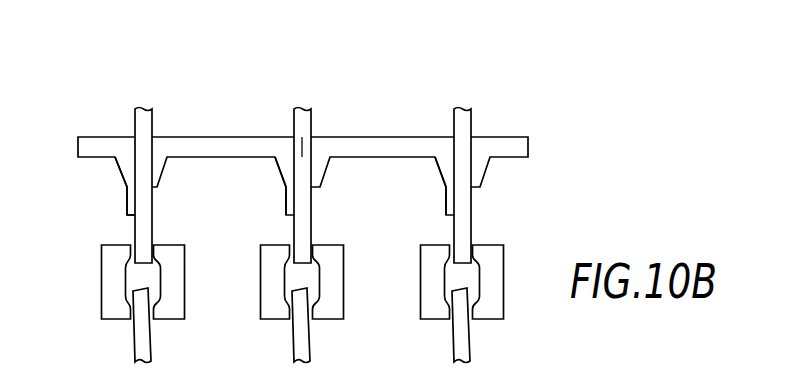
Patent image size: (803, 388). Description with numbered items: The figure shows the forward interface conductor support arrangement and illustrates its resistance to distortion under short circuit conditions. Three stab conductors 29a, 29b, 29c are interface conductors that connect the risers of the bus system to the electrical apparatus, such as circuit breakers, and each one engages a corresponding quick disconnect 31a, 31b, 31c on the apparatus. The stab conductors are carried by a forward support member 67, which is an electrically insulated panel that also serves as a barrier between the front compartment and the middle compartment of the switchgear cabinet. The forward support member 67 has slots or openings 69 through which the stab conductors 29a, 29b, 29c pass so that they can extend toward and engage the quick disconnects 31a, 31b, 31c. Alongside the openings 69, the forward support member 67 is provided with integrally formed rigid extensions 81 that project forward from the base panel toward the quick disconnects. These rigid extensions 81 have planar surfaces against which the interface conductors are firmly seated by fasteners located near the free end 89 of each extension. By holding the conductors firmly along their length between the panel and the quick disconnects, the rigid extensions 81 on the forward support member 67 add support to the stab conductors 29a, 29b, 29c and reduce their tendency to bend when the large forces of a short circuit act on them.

The stab conductor 29a is at (147, 120).
The stab conductor 29b is at (308, 119).
The stab conductor 29c is at (465, 118).
The quick disconnect 31a is at (175, 252).
The quick disconnect 31b is at (333, 251).
The quick disconnect 31c is at (493, 251).
The forward support member 67 is at (518, 136).
The slots or openings 69 is at (299, 152).
The rigid extensions 81 is at (125, 186).
The free end 89 is at (134, 216).